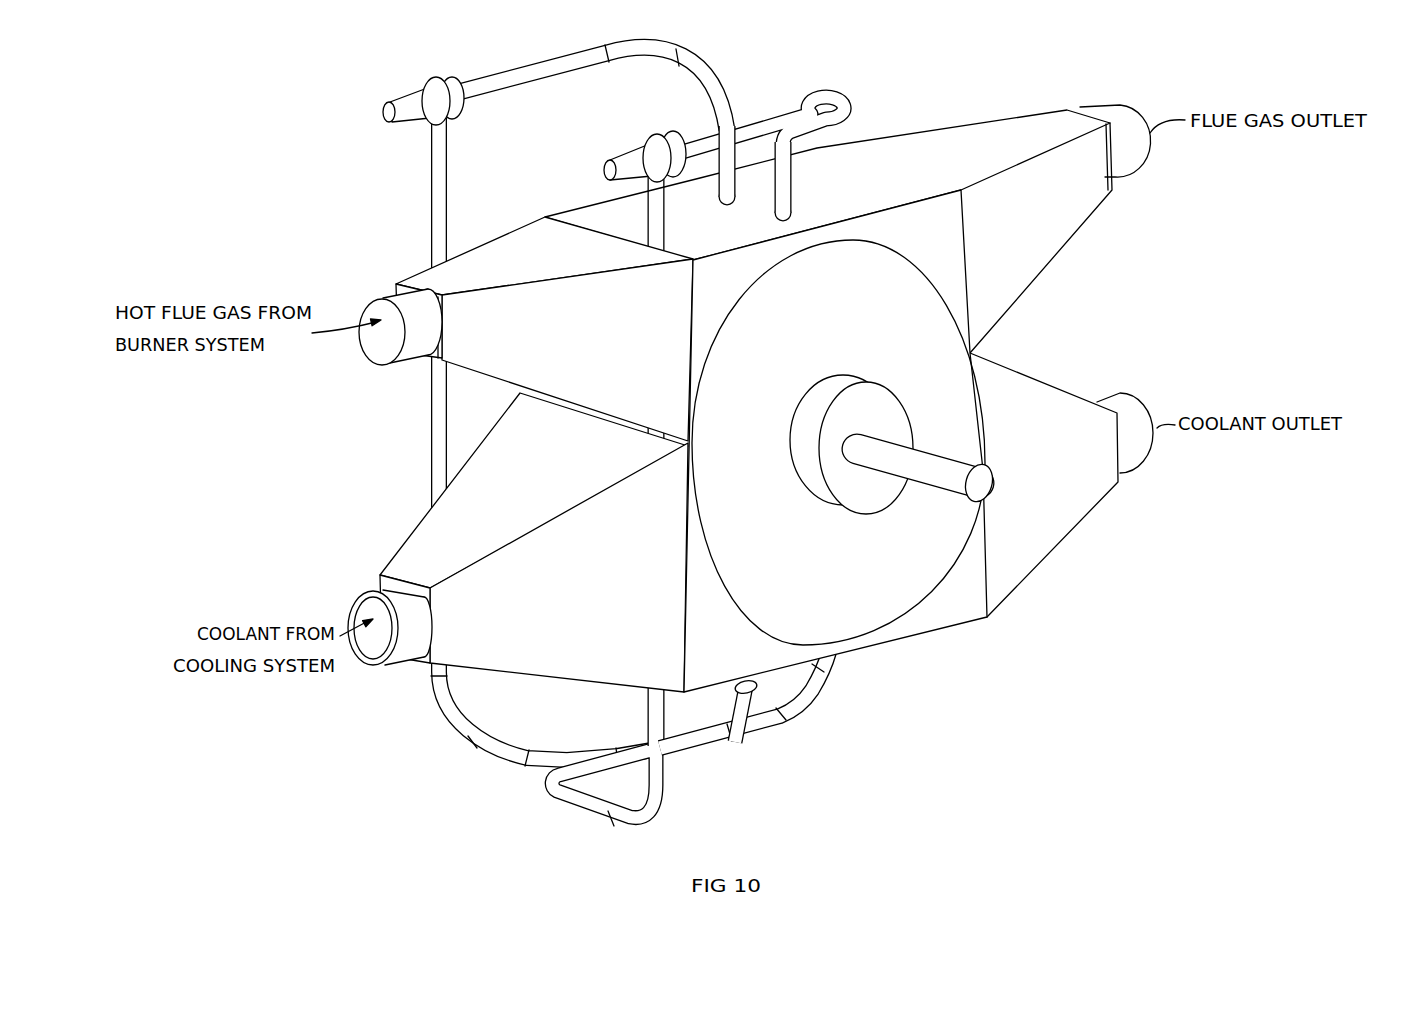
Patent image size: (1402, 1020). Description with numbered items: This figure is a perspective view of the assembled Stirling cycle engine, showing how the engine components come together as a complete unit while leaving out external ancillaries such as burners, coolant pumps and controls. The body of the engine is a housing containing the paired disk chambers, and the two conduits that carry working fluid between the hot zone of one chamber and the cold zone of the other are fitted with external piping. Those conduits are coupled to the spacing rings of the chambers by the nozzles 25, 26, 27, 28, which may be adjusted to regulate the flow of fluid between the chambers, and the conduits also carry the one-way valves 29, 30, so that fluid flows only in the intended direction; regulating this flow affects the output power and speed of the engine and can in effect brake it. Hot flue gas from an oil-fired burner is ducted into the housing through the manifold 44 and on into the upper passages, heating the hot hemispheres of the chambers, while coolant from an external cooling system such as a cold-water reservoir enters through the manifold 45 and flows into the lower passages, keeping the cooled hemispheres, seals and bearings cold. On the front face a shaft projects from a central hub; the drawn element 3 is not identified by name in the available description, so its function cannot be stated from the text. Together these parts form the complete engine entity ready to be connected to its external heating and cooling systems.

The rotor shaft 3 is at (930, 467).
The nozzle 25 is at (738, 192).
The nozzle 26 is at (799, 193).
The nozzle 27 is at (729, 740).
The nozzle 28 is at (827, 660).
The one-way valve 29 is at (438, 85).
The one-way valve 30 is at (662, 140).
The manifold 44 is at (427, 280).
The manifold 45 is at (460, 637).